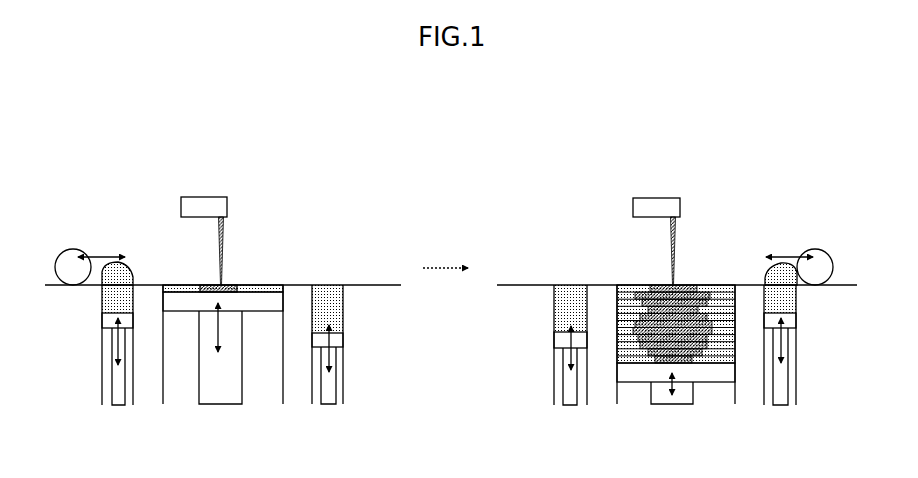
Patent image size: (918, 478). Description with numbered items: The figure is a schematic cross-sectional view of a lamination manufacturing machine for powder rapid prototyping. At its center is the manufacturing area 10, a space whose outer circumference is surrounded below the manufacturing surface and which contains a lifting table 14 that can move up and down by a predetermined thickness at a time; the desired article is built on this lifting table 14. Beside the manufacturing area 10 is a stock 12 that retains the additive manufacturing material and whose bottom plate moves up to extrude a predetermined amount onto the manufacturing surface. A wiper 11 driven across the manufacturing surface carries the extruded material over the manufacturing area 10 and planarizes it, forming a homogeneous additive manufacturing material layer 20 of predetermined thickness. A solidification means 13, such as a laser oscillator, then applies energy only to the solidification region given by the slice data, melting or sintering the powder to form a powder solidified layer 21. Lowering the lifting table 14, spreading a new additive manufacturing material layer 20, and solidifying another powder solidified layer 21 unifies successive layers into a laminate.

The manufacturing area 10 is at (283, 285).
The wiper 11 is at (70, 267).
The stock 12 is at (102, 330).
The solidification means 13 is at (222, 205).
The lifting table 14 is at (266, 305).
The additive manufacturing material layer 20 is at (267, 285).
The powder solidified layer 21 is at (200, 285).